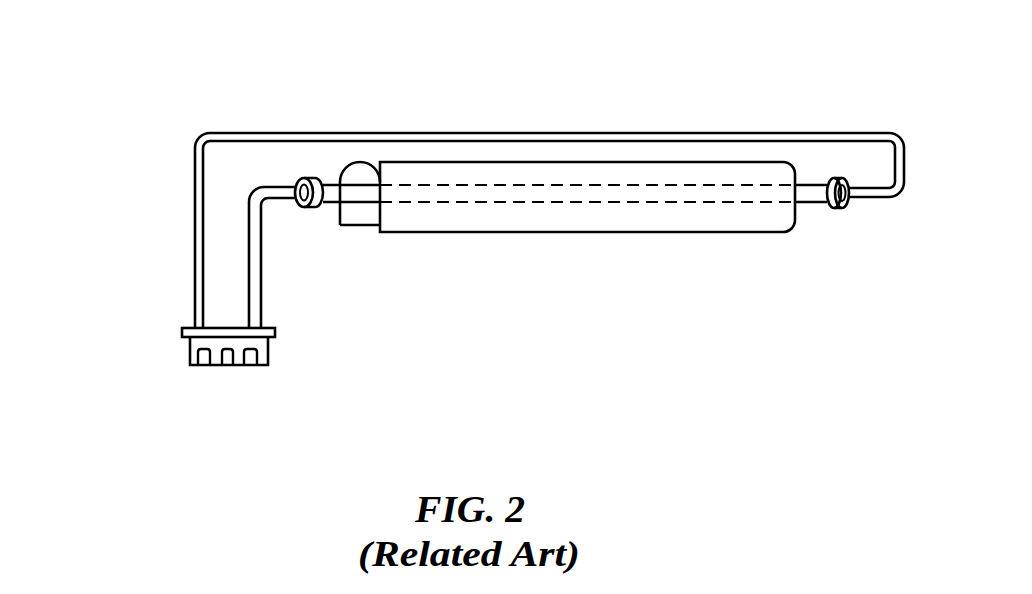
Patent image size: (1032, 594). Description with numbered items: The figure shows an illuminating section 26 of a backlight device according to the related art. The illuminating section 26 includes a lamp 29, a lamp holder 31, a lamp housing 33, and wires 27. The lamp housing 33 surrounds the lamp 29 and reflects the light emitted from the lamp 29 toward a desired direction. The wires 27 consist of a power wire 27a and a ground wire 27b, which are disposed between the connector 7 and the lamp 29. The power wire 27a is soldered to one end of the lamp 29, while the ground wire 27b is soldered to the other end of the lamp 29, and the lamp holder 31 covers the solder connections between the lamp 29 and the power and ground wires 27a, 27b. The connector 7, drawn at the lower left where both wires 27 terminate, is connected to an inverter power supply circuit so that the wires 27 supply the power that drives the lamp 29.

The illuminating section 26 is at (764, 83).
The wires 27 is at (102, 280).
The power wire 27a is at (249, 250).
The ground wire 27b is at (200, 283).
The lamp holder 31 is at (315, 204).
The lamp 29 is at (812, 196).
The lamp housing 33 is at (647, 225).
The connector 7 is at (214, 358).